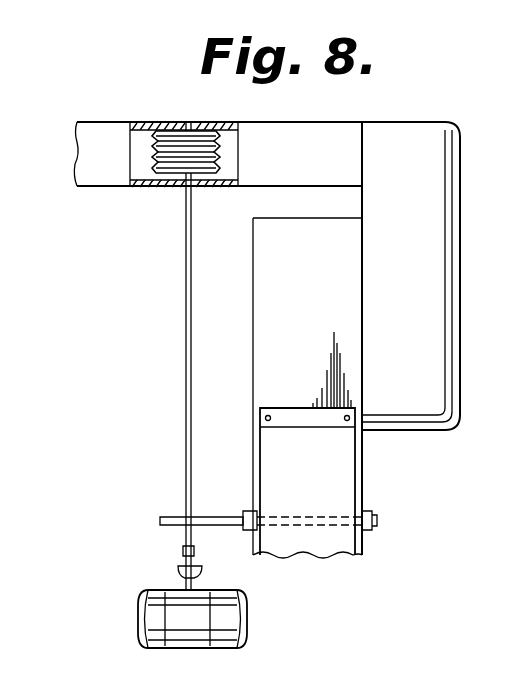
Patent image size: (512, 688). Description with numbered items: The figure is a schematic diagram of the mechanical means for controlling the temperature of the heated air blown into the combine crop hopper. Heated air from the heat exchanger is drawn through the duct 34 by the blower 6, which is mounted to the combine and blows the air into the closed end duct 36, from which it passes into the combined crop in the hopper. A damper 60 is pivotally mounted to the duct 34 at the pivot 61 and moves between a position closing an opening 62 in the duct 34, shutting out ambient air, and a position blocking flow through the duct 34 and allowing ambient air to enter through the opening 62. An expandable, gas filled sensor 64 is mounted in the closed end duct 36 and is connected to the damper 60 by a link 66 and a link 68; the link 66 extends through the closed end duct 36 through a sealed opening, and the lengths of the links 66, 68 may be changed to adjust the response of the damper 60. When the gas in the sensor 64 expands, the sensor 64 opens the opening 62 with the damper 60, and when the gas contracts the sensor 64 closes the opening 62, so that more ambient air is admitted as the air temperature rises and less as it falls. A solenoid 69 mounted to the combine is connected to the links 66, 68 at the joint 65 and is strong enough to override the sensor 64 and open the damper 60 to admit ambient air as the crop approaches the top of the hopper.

The blower 6 is at (443, 276).
The duct 34 is at (307, 388).
The closed end duct 36 is at (109, 183).
The damper 60 is at (345, 478).
The pivot 61 is at (255, 528).
The opening 62 is at (300, 408).
The expandable gas filled sensor 64 is at (157, 140).
The joint 65 is at (186, 558).
The link 66 is at (186, 355).
The link 68 is at (185, 538).
The solenoid 69 is at (202, 648).